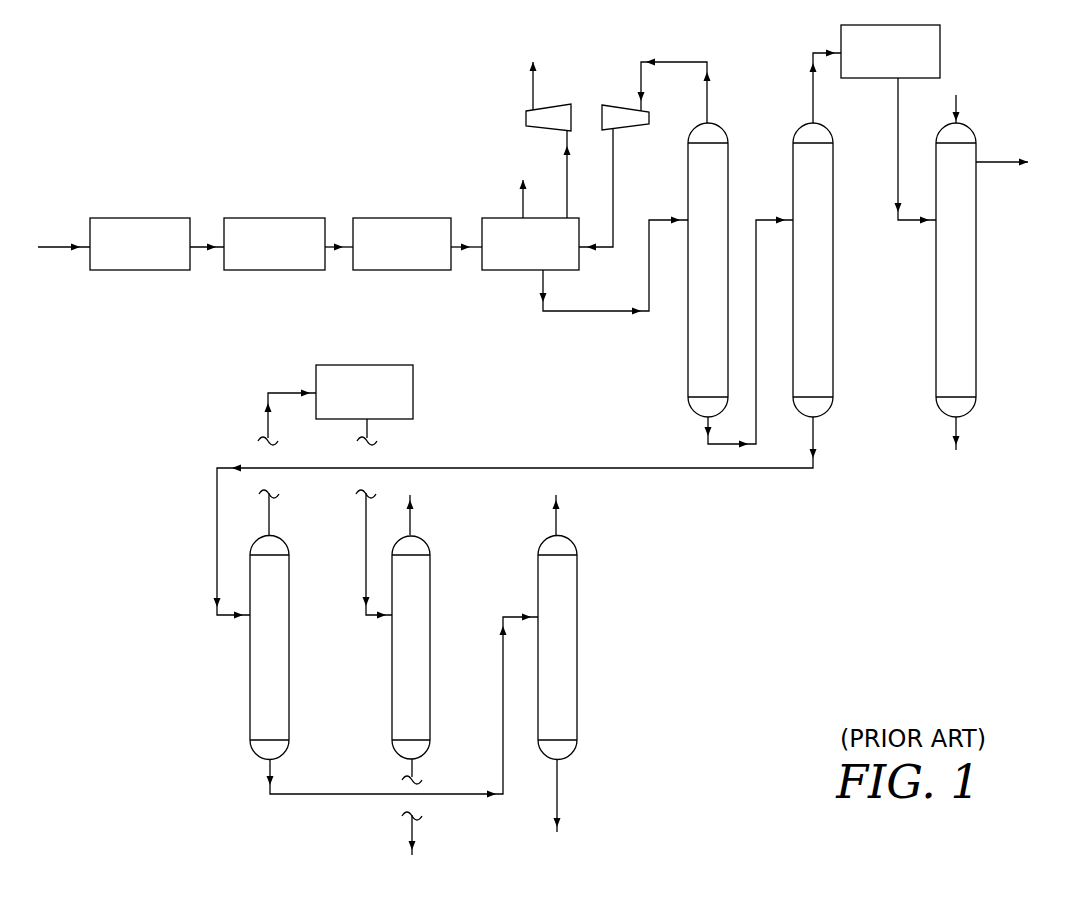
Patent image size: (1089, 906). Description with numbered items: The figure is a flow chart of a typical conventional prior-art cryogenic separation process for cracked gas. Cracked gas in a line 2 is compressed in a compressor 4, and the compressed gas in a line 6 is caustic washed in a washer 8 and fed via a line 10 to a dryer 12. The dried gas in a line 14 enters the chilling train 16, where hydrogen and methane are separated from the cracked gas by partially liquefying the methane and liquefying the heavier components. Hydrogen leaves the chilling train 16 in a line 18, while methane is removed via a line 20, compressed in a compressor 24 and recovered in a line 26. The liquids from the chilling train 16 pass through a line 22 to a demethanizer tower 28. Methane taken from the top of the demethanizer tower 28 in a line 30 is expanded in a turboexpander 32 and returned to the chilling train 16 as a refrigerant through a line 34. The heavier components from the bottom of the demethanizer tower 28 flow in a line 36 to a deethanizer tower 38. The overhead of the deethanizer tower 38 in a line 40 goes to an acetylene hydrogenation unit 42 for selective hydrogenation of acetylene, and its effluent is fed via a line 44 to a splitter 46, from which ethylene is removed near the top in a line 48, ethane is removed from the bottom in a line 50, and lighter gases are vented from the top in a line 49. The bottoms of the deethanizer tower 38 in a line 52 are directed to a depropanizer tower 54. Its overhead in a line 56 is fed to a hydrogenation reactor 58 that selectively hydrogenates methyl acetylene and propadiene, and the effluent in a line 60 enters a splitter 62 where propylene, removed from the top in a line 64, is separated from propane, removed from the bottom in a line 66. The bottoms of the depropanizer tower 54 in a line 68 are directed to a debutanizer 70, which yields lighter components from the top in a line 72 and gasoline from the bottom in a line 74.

The line 2 is at (63, 247).
The compressor 4 is at (140, 244).
The line 6 is at (208, 246).
The washer 8 is at (274, 244).
The line 10 is at (338, 246).
The dryer 12 is at (402, 244).
The line 14 is at (468, 246).
The chilling train 16 is at (530, 244).
The line 18 is at (522, 195).
The line 20 is at (567, 168).
The line 22 is at (603, 312).
The compressor 24 is at (557, 105).
The line 26 is at (530, 90).
The demethanizer tower 28 is at (685, 370).
The line 30 is at (683, 62).
The turboexpander 32 is at (640, 127).
The line 34 is at (608, 249).
The line 36 is at (768, 218).
The deethanizer tower 38 is at (833, 312).
The line 40 is at (810, 83).
The acetylene hydrogenation unit 42 is at (890, 51).
The line 44 is at (897, 123).
The C2 splitter 46 is at (977, 233).
The line 48 is at (996, 163).
The line 49 is at (957, 108).
The line 50 is at (955, 427).
The line 52 is at (635, 468).
The depropanizer tower 54 is at (293, 677).
The line 56 is at (265, 410).
The C3 hydrogenation reactor 58 is at (364, 405).
The line 60 is at (365, 533).
The C3 splitter 62 is at (432, 587).
The line 64 is at (412, 527).
The line 66 is at (412, 828).
The line 68 is at (307, 797).
The debutanizer 70 is at (578, 643).
The line 72 is at (557, 526).
The line 74 is at (558, 793).